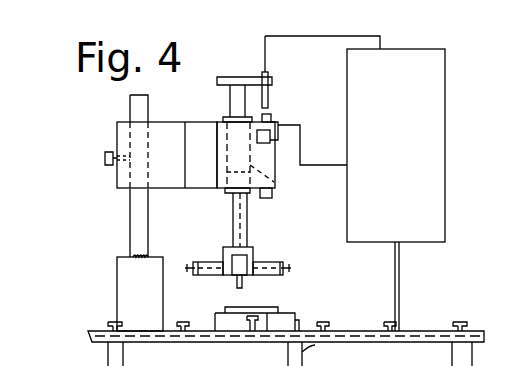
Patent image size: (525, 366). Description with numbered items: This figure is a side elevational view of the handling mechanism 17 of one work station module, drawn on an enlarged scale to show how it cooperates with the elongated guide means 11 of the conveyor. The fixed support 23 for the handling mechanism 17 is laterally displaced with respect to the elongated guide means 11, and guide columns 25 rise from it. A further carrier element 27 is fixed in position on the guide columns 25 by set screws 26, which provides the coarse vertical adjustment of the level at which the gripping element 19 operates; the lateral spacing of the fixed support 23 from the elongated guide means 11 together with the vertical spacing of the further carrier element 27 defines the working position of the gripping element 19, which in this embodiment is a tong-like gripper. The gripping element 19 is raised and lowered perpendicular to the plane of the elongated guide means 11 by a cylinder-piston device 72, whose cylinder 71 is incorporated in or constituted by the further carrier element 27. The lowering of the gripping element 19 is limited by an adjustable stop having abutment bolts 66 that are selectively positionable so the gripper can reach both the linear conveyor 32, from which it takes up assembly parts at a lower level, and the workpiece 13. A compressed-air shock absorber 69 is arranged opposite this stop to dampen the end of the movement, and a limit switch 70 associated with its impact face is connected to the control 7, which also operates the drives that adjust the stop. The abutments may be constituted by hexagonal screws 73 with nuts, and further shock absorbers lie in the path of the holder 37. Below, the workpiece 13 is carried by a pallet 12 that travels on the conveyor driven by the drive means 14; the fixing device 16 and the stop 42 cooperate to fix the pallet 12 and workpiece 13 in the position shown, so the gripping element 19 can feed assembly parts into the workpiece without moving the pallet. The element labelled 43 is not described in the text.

The control 7 is at (422, 120).
The elongated guide means 11 is at (423, 336).
The pallet 12 is at (297, 318).
The workpiece 13 is at (272, 309).
The drive means 14 is at (108, 355).
The fixing device 16 is at (242, 312).
The handling mechanism 17 is at (207, 88).
The gripping element 19 is at (265, 250).
The fixed support 23 is at (128, 288).
The guide columns 25 is at (135, 118).
The set screws 26 is at (105, 160).
The further carrier element 27 is at (178, 132).
The linear conveyor 32 is at (315, 345).
The holder 37 is at (235, 250).
The stop 42 is at (328, 322).
The lower bracket 43 is at (302, 352).
The abutment bolt 66 is at (268, 103).
The shock absorber 69 is at (266, 118).
The limit switch 70 is at (278, 133).
The cylinder 71 is at (286, 180).
The cylinder-piston device 72 is at (248, 200).
The hexagonal screws 73 is at (288, 356).